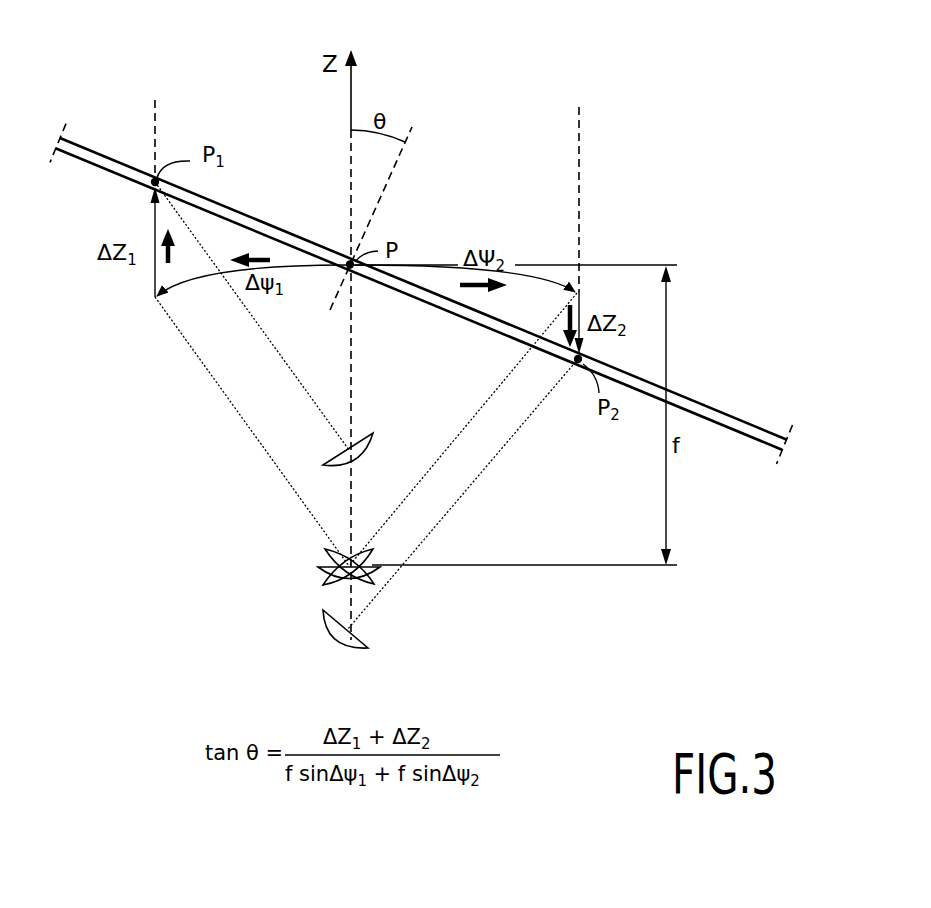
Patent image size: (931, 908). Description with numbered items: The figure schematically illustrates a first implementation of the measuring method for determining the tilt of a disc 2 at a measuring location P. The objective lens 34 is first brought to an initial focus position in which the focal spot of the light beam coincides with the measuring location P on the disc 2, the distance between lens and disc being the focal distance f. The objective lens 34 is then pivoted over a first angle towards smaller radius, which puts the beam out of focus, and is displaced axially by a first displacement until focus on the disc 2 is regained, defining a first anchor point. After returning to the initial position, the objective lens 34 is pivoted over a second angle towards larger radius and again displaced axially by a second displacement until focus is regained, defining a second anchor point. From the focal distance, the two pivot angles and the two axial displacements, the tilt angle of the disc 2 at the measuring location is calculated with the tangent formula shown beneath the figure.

The disc 2 is at (712, 408).
The objective lens 34 is at (339, 539).